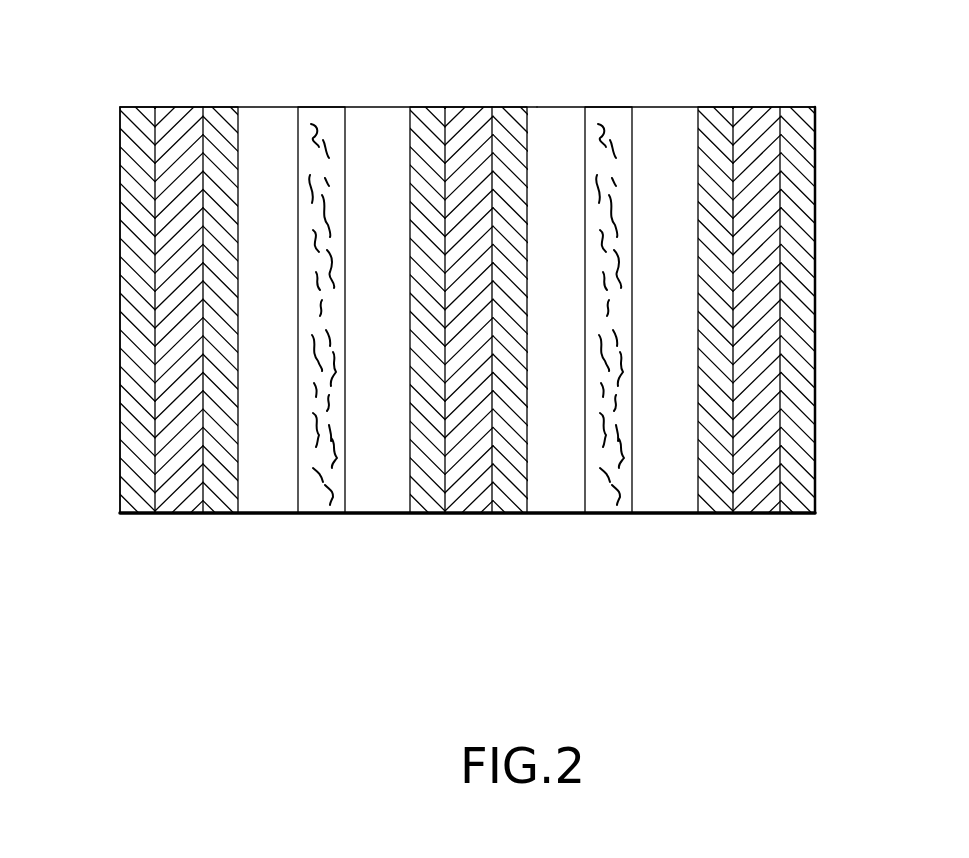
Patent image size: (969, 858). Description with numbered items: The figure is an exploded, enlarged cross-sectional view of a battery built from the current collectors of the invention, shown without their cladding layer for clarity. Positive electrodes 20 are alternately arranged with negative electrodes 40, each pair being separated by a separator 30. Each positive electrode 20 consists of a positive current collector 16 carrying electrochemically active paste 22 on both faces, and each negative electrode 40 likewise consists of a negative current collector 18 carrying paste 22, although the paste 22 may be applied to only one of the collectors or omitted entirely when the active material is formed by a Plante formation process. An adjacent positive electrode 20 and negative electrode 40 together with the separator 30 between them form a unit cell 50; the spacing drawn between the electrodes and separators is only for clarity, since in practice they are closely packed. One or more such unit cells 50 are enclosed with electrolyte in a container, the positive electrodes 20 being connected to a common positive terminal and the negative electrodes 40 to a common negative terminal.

The positive current collector 16 is at (178, 115).
The negative current collector 18 is at (465, 117).
The positive electrode 20 is at (125, 519).
The electrochemically active paste 22 is at (212, 222).
The separator 30 is at (322, 515).
The negative electrode 40 is at (528, 519).
The unit cell 50 is at (537, 615).